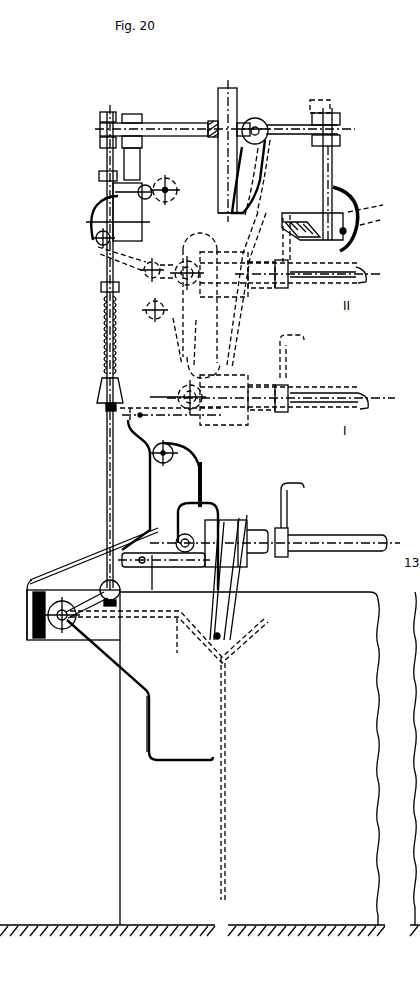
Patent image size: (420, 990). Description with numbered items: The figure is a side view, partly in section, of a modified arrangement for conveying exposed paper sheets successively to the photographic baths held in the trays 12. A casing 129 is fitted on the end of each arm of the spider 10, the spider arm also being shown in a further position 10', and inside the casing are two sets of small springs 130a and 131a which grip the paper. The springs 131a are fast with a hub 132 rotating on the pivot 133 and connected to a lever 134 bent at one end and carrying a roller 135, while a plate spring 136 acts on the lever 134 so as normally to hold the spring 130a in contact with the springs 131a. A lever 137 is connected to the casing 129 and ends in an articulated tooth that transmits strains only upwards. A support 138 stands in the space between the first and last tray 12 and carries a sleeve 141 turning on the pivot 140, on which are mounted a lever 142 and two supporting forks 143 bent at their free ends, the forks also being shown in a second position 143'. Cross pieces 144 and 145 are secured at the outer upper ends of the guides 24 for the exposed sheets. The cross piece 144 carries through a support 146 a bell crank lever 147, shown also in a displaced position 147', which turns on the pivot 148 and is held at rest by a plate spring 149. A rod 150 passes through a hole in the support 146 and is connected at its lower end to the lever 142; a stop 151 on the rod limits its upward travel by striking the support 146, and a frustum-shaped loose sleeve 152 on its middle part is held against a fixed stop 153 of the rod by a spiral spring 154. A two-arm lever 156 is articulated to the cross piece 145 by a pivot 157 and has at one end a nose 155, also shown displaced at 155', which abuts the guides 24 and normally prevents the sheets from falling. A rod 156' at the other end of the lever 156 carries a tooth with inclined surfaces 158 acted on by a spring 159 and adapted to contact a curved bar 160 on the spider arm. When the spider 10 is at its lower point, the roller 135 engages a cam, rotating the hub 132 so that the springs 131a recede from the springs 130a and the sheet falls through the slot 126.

The spider 10 is at (312, 531).
The spider 10' is at (268, 329).
The tray 12 is at (268, 758).
The guides 24 is at (233, 95).
The slot 126 is at (218, 929).
The casing 129 is at (226, 522).
The springs 130a is at (238, 598).
The springs 131a is at (218, 580).
The hub 132 is at (178, 538).
The pivot 133 is at (186, 544).
The lever 134 is at (188, 483).
The roller 135 is at (162, 445).
The plate spring 136 is at (204, 480).
The lever 137 is at (150, 560).
The support 138 is at (50, 634).
The pivot 140 is at (68, 621).
The sleeve 141 is at (62, 618).
The lever 142 is at (90, 600).
The supporting forks 143 is at (140, 690).
The supporting forks 143' is at (169, 755).
The cross piece 144 is at (208, 118).
The cross piece 145 is at (262, 124).
The support 146 is at (156, 130).
The bell crank lever 147 is at (96, 271).
The bell crank lever 147' is at (111, 208).
The pivot 148 is at (98, 243).
The plate spring 149 is at (93, 204).
The rod 150 is at (112, 472).
The stop 151 is at (100, 118).
The frustrum-shaped loose sleeve 152 is at (105, 387).
The stop 153 is at (106, 410).
The spiral spring 154 is at (108, 330).
The nose 155 is at (267, 176).
The nose 155' is at (271, 254).
The two-arm lever 156 is at (345, 165).
The rod 156' is at (363, 183).
The pivot 157 is at (262, 130).
The tooth having inclined surfaces 158 is at (308, 232).
The spring 159 is at (344, 193).
The curved bar 160 is at (283, 510).